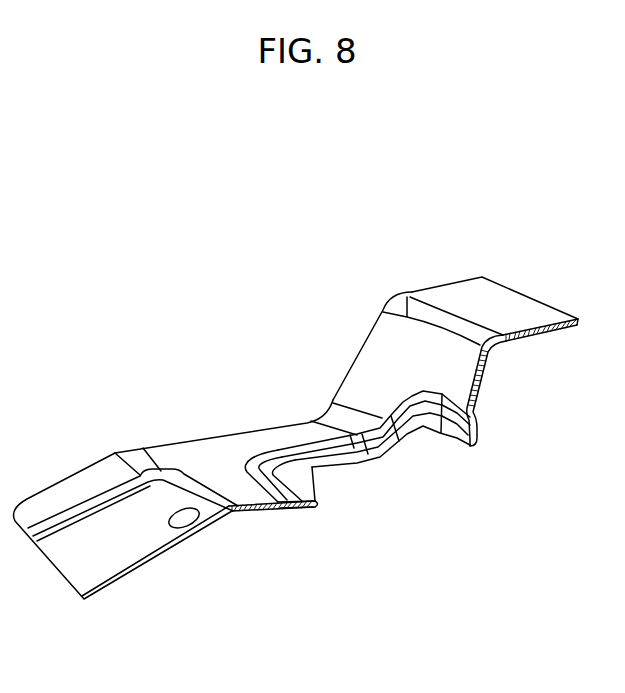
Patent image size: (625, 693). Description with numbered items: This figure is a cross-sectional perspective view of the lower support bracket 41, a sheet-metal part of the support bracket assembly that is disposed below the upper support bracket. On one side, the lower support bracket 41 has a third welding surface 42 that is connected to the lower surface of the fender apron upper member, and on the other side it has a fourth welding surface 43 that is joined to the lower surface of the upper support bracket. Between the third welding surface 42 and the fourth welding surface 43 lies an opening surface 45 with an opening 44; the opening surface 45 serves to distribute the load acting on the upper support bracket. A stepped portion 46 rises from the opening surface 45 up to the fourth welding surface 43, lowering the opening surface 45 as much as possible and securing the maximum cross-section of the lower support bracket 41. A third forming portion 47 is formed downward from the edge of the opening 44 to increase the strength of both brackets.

The lower support bracket 41 is at (316, 203).
The third welding surface 42 is at (122, 547).
The fourth welding surface 43 is at (493, 287).
The opening 44 is at (343, 480).
The opening surface 45 is at (263, 437).
The stepped portion 46 is at (380, 335).
The third forming portion 47 is at (313, 455).